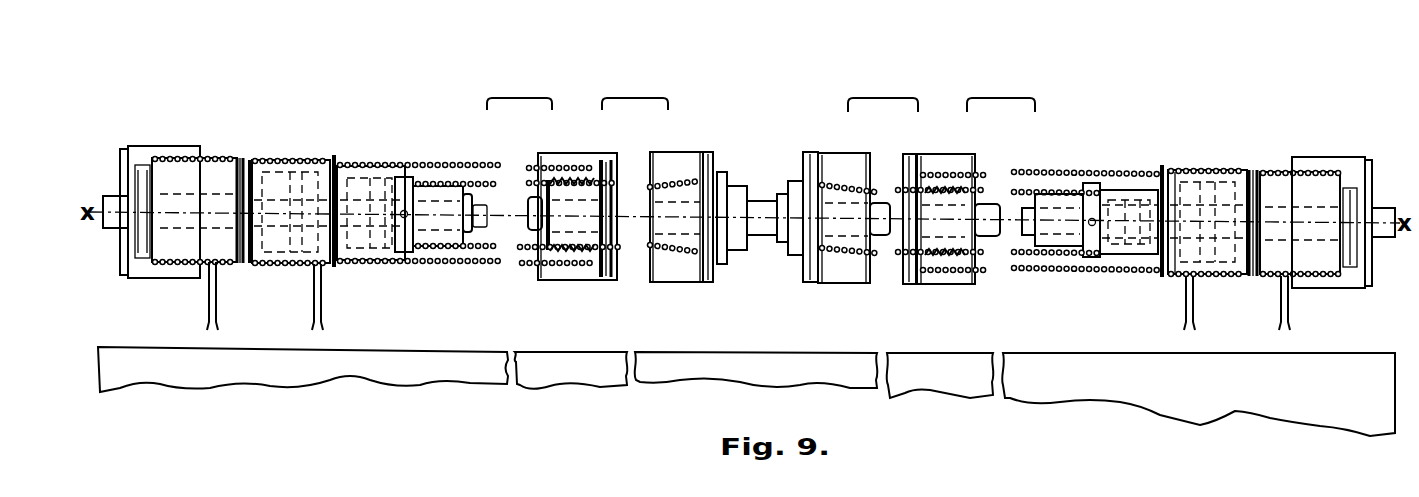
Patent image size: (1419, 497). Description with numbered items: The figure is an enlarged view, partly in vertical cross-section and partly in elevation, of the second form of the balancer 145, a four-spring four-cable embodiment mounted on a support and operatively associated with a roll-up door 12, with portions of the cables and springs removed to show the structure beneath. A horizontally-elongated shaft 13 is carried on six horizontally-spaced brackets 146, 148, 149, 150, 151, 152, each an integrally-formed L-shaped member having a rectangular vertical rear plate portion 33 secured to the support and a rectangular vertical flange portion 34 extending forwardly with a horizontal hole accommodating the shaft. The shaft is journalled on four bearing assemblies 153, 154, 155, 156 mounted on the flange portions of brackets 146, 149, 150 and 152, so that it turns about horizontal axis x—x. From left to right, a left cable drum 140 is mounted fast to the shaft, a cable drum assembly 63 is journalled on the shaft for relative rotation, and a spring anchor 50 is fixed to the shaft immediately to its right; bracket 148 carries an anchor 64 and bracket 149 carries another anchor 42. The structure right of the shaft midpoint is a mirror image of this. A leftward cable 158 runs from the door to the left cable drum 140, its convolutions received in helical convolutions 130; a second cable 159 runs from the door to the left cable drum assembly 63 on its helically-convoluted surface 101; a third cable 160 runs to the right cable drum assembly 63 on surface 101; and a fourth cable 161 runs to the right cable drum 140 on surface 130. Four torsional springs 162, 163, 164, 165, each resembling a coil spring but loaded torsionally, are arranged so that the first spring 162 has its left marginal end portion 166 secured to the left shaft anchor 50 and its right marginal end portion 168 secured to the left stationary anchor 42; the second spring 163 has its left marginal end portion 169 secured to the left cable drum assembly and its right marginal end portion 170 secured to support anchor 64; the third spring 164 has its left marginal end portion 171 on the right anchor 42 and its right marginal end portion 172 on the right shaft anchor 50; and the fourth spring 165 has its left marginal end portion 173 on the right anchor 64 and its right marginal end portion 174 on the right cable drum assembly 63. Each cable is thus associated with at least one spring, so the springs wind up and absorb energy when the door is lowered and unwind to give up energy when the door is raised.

The roll-up door 12 is at (568, 391).
The shaft 13 is at (1392, 195).
The rear plate portion 33 is at (172, 155).
The flange portion 34 is at (124, 150).
The stationary anchor 42 is at (708, 150).
The spring anchor 50 is at (405, 180).
The cable drum assembly 63 is at (326, 150).
The anchor 64 is at (597, 282).
The helically-convoluted surface 101 is at (325, 268).
The helical convolutions 130 is at (232, 157).
The cable drum 140 is at (240, 145).
The balancer 145 is at (758, 150).
The bracket 146 is at (148, 140).
The bracket 148 is at (560, 140).
The bracket 149 is at (690, 140).
The bracket 150 is at (822, 148).
The bracket 151 is at (937, 140).
The bracket 152 is at (1328, 150).
The bearing assembly 153 is at (135, 270).
The bearing assembly 154 is at (726, 268).
The bearing assembly 155 is at (798, 266).
The bearing assembly 156 is at (1348, 277).
The leftward cable 158 is at (218, 300).
The second cable 159 is at (323, 318).
The third cable 160 is at (1186, 312).
The fourth cable 161 is at (1281, 314).
The first spring 162 is at (530, 188).
The second spring 163 is at (450, 272).
The third spring 164 is at (985, 196).
The fourth spring 165 is at (1012, 288).
The left marginal end portion 166 is at (440, 180).
The right marginal end portion 168 is at (680, 153).
The left marginal end portion 169 is at (350, 165).
The right marginal end portion 170 is at (595, 274).
The left marginal end portion 171 is at (838, 183).
The right marginal end portion 172 is at (1045, 180).
The left marginal end portion 173 is at (940, 165).
The right marginal end portion 174 is at (1140, 172).